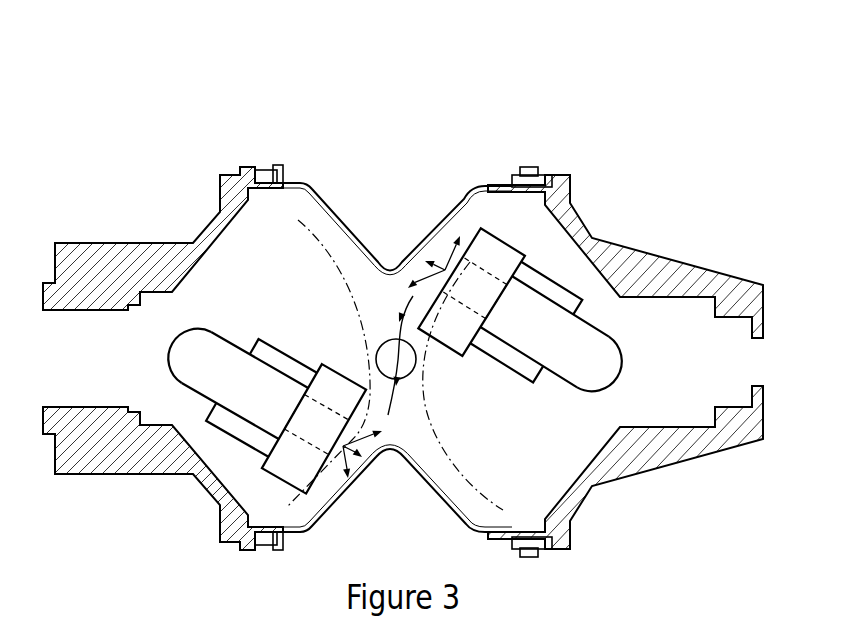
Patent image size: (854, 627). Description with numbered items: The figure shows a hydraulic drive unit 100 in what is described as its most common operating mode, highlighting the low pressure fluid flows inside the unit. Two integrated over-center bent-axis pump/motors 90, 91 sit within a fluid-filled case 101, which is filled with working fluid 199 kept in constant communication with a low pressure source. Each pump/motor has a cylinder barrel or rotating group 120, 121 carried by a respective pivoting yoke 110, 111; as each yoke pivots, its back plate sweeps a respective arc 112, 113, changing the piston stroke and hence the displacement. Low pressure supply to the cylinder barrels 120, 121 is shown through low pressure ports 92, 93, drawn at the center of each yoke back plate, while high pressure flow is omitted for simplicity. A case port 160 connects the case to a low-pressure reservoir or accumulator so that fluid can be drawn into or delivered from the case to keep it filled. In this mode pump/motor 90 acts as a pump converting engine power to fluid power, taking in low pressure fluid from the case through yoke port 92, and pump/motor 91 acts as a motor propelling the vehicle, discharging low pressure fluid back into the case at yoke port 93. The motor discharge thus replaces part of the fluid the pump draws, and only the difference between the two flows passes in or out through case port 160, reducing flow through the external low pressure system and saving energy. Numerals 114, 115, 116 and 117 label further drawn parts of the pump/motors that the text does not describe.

The hydraulic drive unit 100 is at (90, 109).
The pump/motor 90 is at (245, 43).
The pump/motor 91 is at (508, 48).
The fluid-filled case 101 is at (345, 220).
The working fluid 199 is at (373, 255).
The case port 160 is at (412, 452).
The yoke 110 is at (300, 355).
The yoke 111 is at (572, 222).
The arc 112 is at (316, 229).
The arc 113 is at (432, 425).
The first plunger 114 is at (197, 358).
The second plunger 115 is at (595, 362).
The first coil housing 116 is at (228, 342).
The second coil housing 117 is at (586, 338).
The cylinder barrel/rotating group 120 is at (259, 335).
The cylinder barrel/rotating group 121 is at (559, 285).
The low pressure port 92 is at (340, 448).
The low pressure port 93 is at (474, 237).